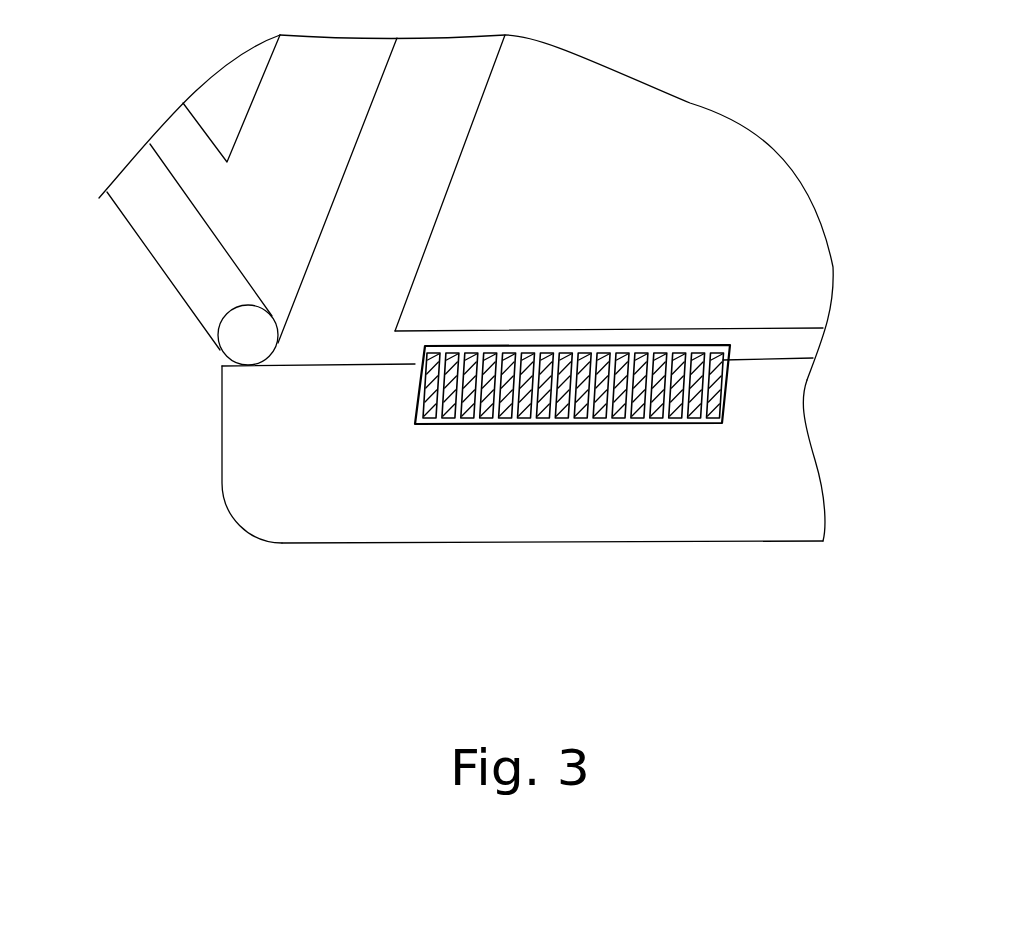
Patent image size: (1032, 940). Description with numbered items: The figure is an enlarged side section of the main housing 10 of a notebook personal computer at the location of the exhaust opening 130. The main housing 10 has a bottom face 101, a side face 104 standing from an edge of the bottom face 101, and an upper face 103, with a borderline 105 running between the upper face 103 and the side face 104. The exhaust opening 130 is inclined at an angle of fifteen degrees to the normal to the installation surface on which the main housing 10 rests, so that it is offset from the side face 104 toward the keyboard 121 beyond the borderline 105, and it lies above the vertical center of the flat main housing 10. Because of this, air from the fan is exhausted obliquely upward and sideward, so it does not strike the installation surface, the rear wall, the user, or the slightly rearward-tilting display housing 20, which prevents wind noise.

The main housing 10 is at (518, 493).
The display housing 20 is at (120, 253).
The bottom face 101 is at (683, 543).
The upper face 103 is at (800, 345).
The side face 104 is at (797, 485).
The borderline 105 is at (310, 367).
The keyboard 121 is at (603, 207).
The exhaust opening 130 is at (528, 427).